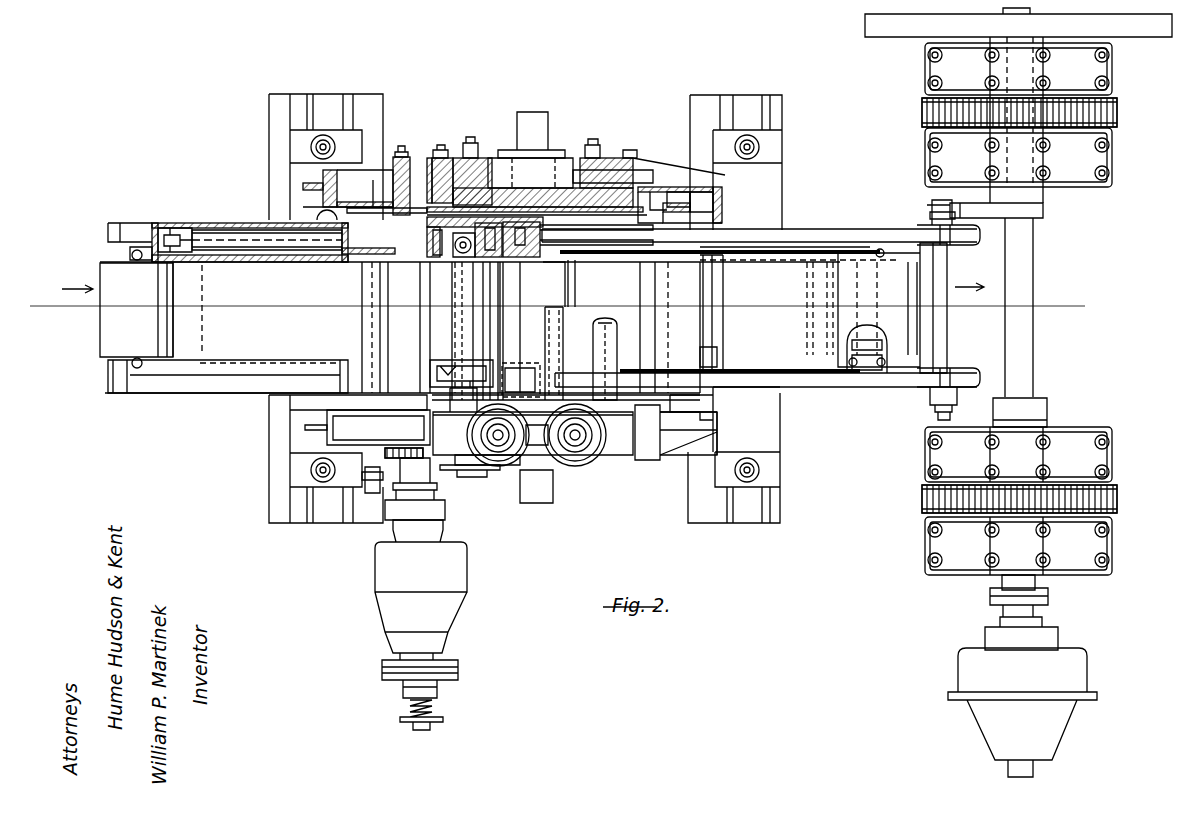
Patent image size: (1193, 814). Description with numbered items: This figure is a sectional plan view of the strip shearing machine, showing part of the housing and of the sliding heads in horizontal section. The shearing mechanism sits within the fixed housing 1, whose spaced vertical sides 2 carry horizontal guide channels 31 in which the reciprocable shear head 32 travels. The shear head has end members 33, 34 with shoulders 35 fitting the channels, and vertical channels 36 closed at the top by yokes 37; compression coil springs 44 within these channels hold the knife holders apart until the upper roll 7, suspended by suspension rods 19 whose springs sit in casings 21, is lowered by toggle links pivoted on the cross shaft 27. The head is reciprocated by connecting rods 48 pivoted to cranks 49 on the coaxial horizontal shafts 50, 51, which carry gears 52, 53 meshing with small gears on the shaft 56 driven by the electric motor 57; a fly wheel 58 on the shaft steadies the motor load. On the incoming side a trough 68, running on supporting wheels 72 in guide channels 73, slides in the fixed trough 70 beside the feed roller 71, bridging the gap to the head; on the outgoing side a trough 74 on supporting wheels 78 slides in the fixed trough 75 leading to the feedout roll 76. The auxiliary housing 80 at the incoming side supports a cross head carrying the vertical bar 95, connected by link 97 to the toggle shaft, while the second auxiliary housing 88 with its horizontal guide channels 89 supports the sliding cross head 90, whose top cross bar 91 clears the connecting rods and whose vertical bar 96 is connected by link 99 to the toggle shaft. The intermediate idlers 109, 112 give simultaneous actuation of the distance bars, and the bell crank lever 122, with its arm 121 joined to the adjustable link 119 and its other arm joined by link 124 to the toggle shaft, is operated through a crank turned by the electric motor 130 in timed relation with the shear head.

The fixed housing 1 is at (783, 165).
The sides of the housing 2 is at (457, 173).
The upper roll 7 is at (545, 123).
The suspension rods 19 is at (567, 433).
The casings 21 is at (498, 447).
The cross shaft 27 is at (558, 320).
The horizontal guide channels 31 is at (605, 170).
The shear head 32 is at (483, 257).
The end member 33 is at (497, 367).
The end member 34 is at (497, 258).
The shoulders 35 is at (440, 178).
The vertical channels 36 is at (482, 207).
The yokes 37 is at (461, 373).
The compression coil springs 44 is at (440, 260).
The connecting rods 48 is at (815, 235).
The cranks 49 is at (985, 220).
The horizontal shaft 50 is at (1032, 210).
The horizontal shaft 51 is at (1040, 398).
The gear 52 is at (1110, 118).
The gear 53 is at (1110, 506).
The shaft 56 is at (1033, 290).
The electric motor 57 is at (1086, 666).
The fly wheel 58 is at (885, 37).
The trough 68 is at (267, 261).
The fixed trough 70 is at (223, 262).
The feed roller 71 is at (104, 327).
The supporting wheels 72 is at (196, 229).
The guide channels 73 is at (222, 228).
The trough 74 is at (755, 253).
The fixed trough 75 is at (770, 220).
The feedout roll 76 is at (935, 327).
The supporting wheels 78 is at (727, 370).
The housing 80 is at (360, 180).
The second auxiliary housing 88 is at (703, 187).
The horizontal guide channels 89 is at (655, 197).
The cross head 90 is at (722, 205).
The top cross bar 91 is at (663, 333).
The vertical bar 95 is at (378, 427).
The vertical bar 96 is at (700, 413).
The link 97 is at (440, 412).
The link 99 is at (655, 445).
The intermediate idler 109 is at (412, 165).
The intermediate idler 112 is at (408, 440).
The link 119 is at (375, 495).
The arm 121 is at (400, 487).
The bell crank lever 122 is at (460, 478).
The link 124 is at (480, 468).
The electric motor 130 is at (460, 592).